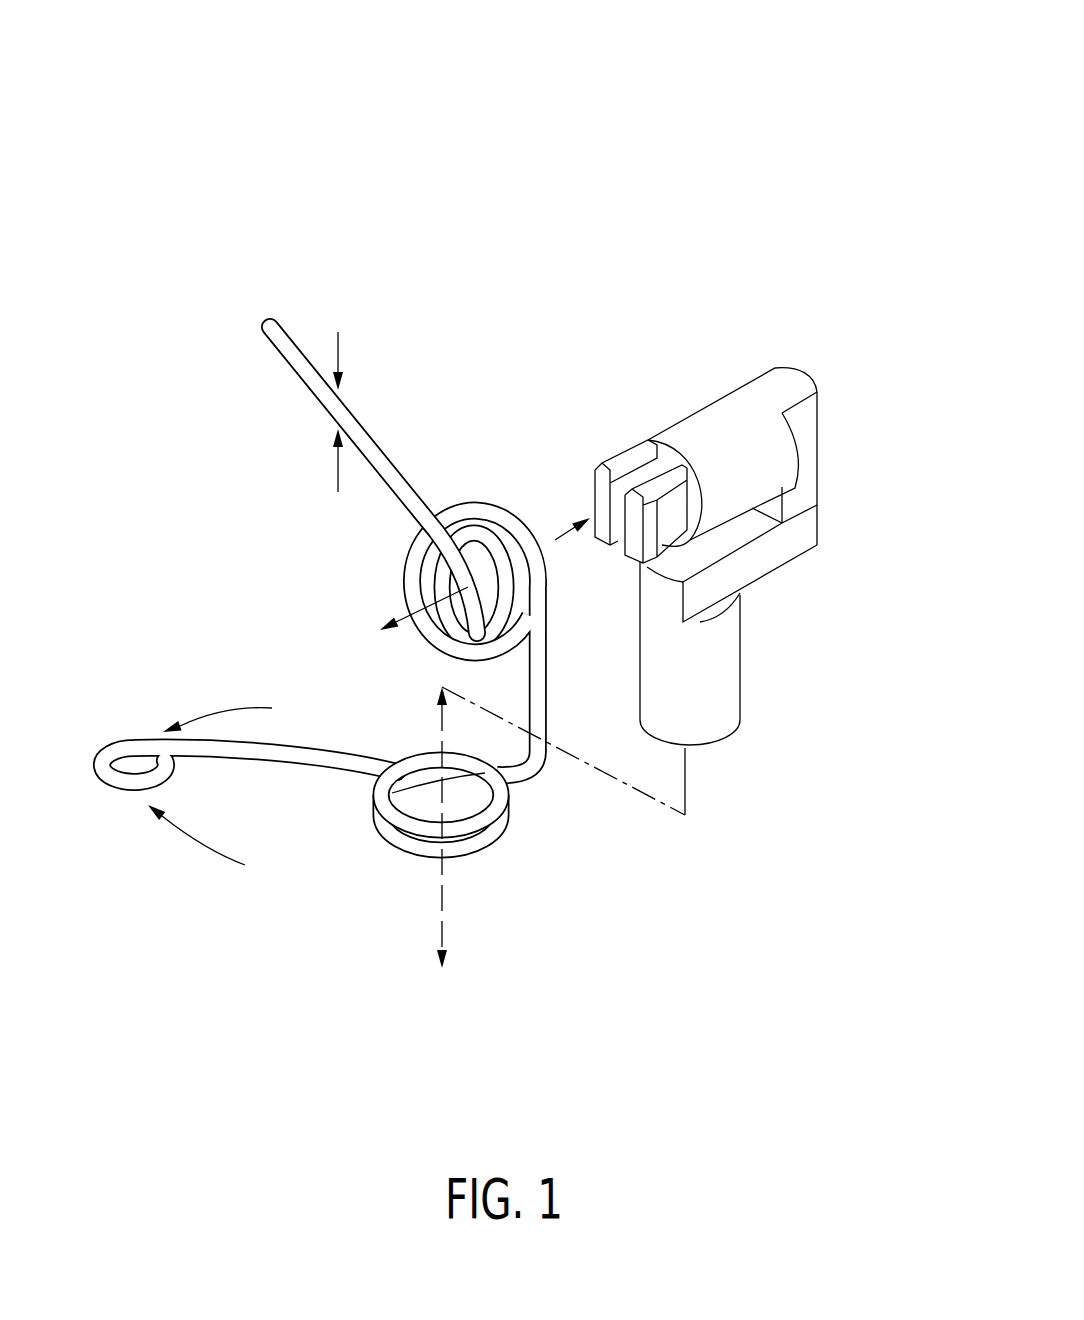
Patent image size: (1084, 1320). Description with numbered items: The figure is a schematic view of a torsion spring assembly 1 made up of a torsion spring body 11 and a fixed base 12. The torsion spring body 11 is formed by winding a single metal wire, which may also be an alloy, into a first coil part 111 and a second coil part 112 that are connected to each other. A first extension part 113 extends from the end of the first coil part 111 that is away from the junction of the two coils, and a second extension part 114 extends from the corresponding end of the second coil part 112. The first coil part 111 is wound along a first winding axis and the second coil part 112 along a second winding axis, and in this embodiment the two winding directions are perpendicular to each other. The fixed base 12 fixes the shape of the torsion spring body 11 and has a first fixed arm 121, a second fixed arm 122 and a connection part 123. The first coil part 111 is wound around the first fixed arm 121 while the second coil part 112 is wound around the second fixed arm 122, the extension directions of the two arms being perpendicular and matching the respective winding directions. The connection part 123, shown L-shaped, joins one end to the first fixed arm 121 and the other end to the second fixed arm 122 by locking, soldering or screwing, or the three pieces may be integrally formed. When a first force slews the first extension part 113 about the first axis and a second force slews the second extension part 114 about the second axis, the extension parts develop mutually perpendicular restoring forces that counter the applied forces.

The torsion spring assembly 1 is at (95, 135).
The torsion spring body 11 is at (694, 33).
The first coil part 111 is at (329, 836).
The second coil part 112 is at (411, 584).
The first extension part 113 is at (290, 752).
The second extension part 114 is at (388, 468).
The fixed base 12 is at (898, 433).
The first fixed arm 121 is at (712, 653).
The second fixed arm 122 is at (767, 455).
The connection part 123 is at (767, 548).